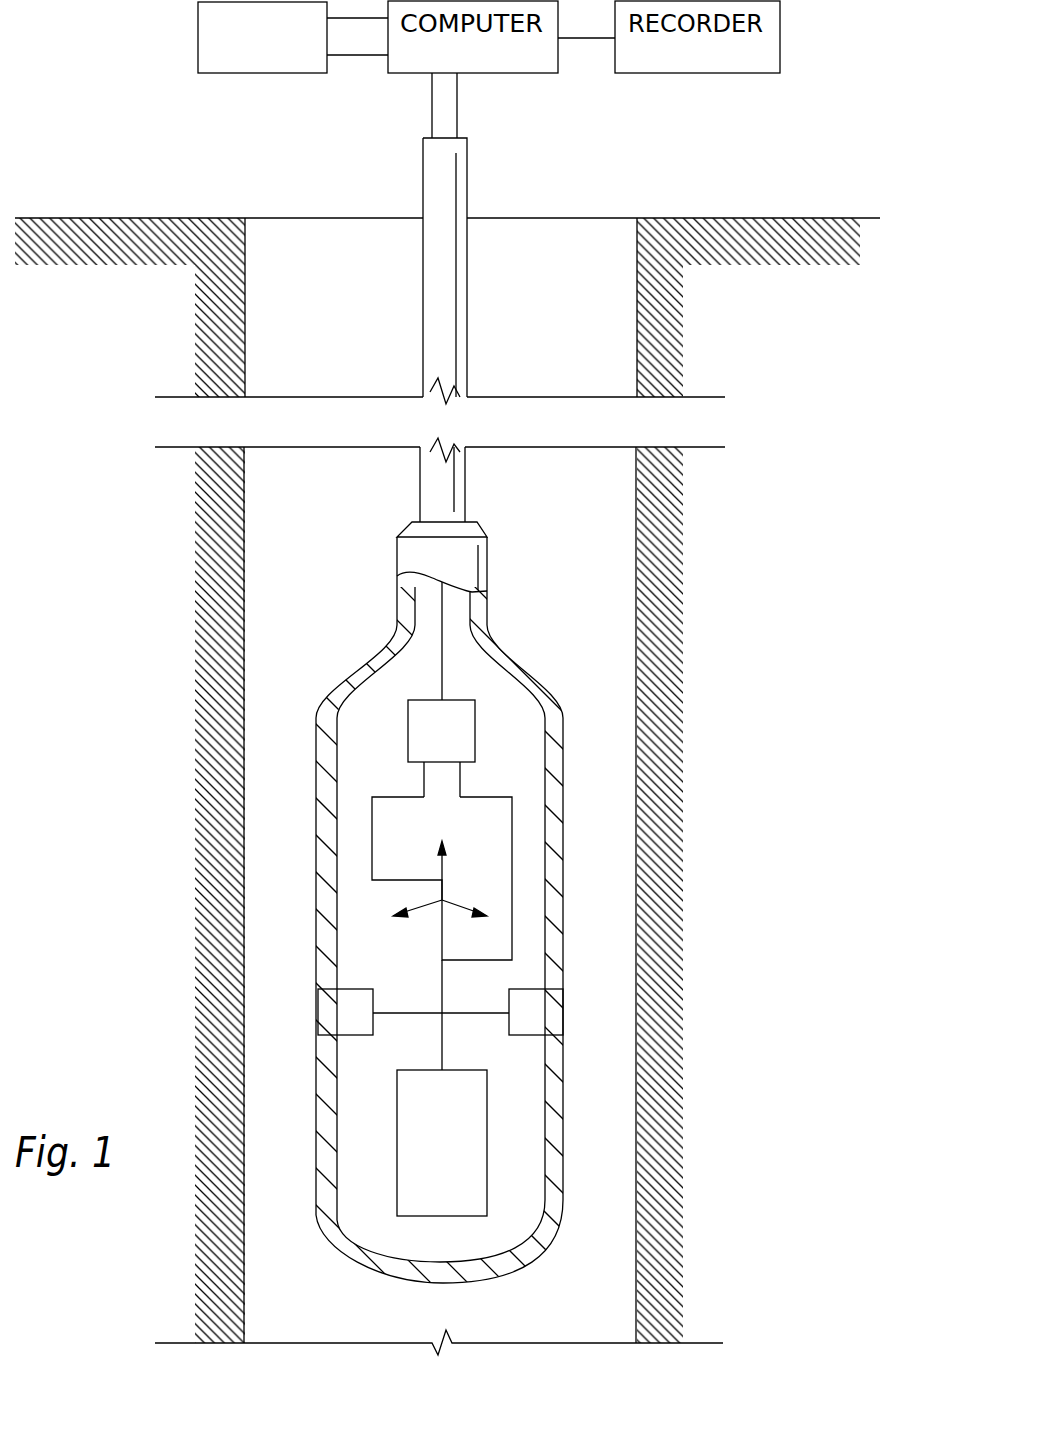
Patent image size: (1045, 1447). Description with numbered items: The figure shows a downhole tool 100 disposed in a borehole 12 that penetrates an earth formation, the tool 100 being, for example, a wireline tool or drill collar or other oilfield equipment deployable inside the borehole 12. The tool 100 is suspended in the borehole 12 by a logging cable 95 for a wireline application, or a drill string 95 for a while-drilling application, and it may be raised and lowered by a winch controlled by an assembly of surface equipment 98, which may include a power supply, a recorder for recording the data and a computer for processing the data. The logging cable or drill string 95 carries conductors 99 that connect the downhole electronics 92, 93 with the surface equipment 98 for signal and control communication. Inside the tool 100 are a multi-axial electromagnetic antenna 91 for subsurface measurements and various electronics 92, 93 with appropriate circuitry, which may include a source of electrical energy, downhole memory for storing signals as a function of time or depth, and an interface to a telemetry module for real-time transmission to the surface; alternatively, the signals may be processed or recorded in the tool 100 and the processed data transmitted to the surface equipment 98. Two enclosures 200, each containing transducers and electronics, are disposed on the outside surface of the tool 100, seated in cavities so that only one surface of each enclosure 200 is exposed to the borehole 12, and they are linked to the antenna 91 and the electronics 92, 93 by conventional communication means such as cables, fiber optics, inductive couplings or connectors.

The surface equipment 98 is at (180, 30).
The conductors 99 is at (450, 97).
The logging cable 95 is at (422, 173).
The borehole 12 is at (636, 510).
The downhole tool 100 is at (522, 897).
The electronics 93 is at (457, 739).
The multi-axial electromagnetic antenna 91 is at (457, 892).
The enclosure 200 is at (330, 1005).
The electronics 92 is at (457, 1149).